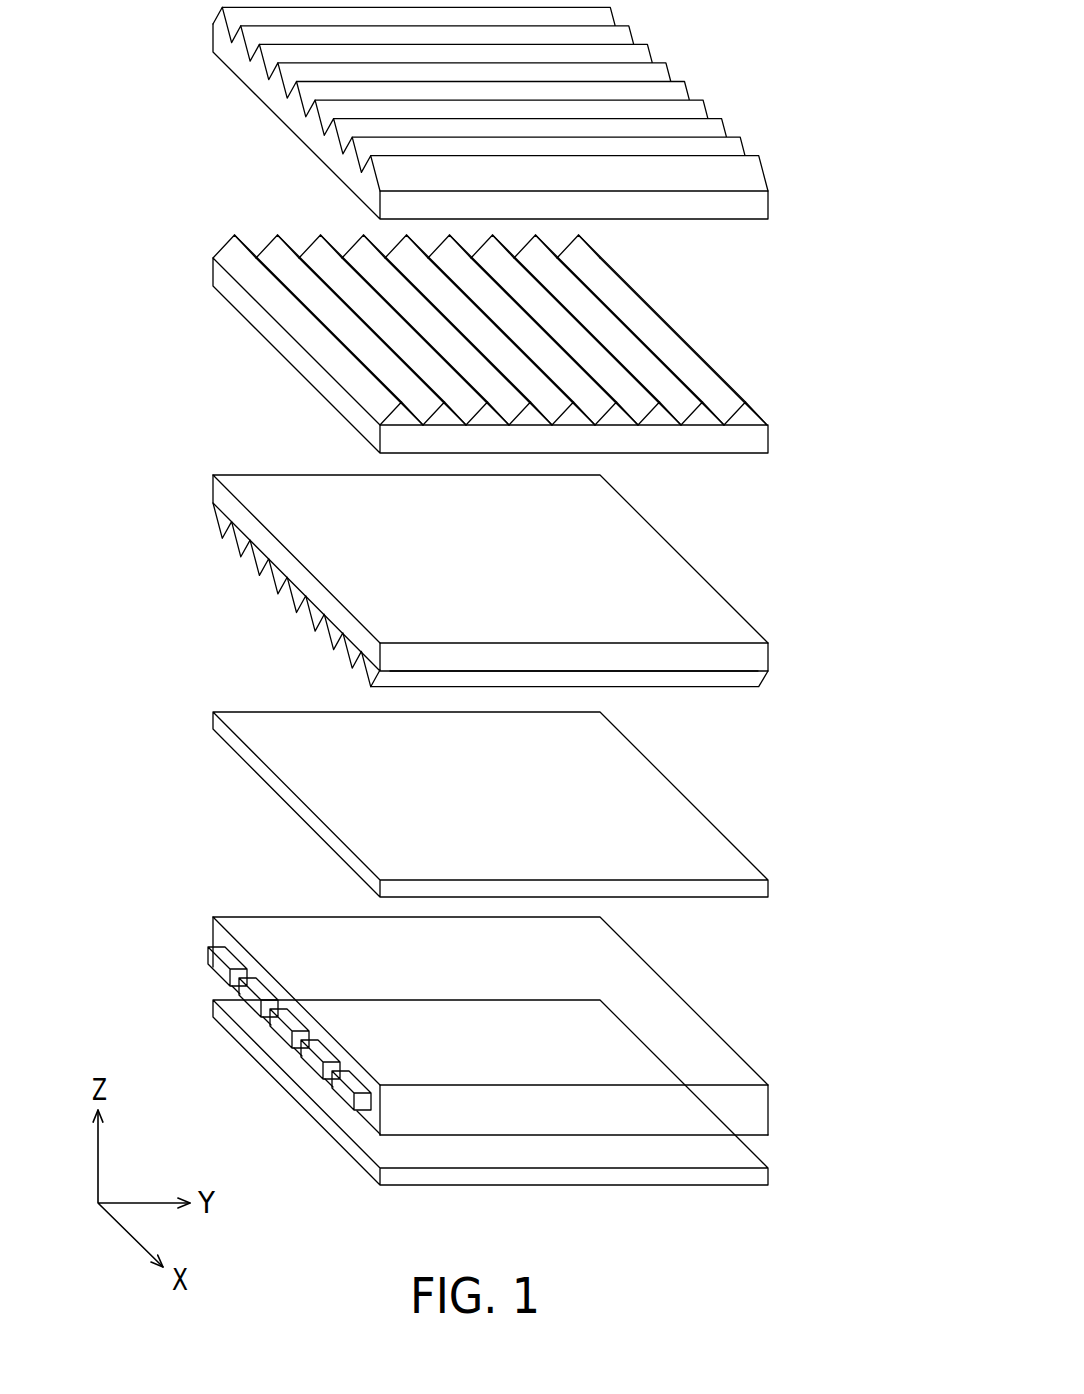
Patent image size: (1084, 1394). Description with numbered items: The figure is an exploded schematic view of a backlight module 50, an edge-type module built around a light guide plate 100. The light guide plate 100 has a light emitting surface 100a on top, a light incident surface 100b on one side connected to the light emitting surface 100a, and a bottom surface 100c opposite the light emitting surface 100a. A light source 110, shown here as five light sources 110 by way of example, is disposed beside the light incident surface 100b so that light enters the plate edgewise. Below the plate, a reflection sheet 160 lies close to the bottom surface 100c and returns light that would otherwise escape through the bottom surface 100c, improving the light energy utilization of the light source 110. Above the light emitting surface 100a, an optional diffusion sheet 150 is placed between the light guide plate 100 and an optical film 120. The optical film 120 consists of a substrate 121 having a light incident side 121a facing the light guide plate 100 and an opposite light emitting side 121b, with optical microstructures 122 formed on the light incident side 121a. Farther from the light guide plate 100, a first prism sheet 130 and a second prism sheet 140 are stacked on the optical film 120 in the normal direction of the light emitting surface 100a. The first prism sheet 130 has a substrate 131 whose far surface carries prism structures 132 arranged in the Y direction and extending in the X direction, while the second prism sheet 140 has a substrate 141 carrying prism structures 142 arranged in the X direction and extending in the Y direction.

The backlight module 50 is at (897, 1253).
The light guide plate 100 is at (477, 1038).
The light emitting surface 100a is at (298, 927).
The light incident surface 100b is at (203, 933).
The bottom surface 100c is at (434, 1149).
The light source 110 is at (282, 1028).
The optical film 120 is at (560, 616).
The substrate 121 is at (533, 616).
The light incident side 121a is at (702, 686).
The light emitting side 121b is at (708, 630).
The optical microstructures 122 is at (748, 682).
The first prism sheet 130 is at (560, 348).
The substrate 131 is at (745, 442).
The prism structures 132 is at (748, 418).
The second prism sheet 140 is at (560, 116).
The substrate 141 is at (745, 207).
The prism structures 142 is at (742, 178).
The diffusion sheet 150 is at (730, 861).
The reflection sheet 160 is at (745, 1177).